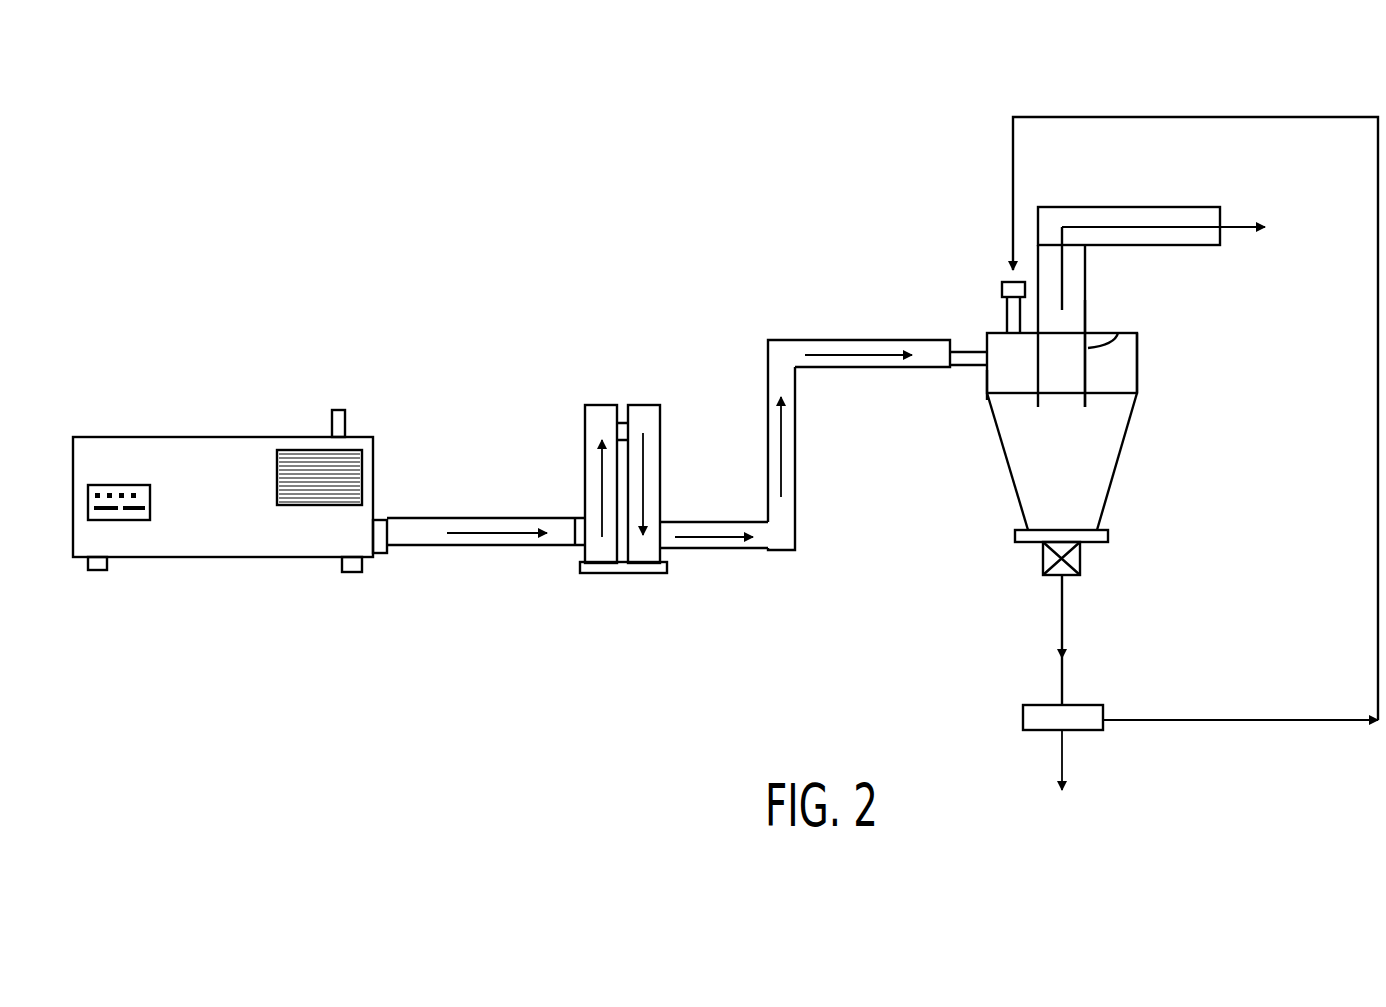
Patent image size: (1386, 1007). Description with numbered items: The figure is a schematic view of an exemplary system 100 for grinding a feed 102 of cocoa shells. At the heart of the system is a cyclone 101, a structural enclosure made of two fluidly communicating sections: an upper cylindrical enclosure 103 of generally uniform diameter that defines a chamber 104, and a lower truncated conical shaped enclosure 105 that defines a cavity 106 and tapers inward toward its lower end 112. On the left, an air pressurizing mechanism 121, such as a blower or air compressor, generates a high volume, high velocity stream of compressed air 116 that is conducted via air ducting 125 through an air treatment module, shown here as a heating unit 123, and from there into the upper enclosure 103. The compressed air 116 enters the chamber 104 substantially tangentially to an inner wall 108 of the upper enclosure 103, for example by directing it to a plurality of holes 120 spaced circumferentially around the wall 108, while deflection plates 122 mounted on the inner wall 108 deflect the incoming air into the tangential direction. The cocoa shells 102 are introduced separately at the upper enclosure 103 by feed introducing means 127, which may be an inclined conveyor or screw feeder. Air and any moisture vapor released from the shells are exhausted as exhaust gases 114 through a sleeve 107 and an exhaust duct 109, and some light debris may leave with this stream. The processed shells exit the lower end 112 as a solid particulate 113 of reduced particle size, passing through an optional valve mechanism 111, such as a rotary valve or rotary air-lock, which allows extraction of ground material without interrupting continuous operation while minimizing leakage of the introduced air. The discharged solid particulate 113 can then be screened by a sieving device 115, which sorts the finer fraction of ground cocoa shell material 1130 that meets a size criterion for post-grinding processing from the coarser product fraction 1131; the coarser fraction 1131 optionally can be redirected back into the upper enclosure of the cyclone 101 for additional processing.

The system 100 is at (565, 285).
The cyclone 101 is at (1080, 408).
The feed 102 is at (1003, 283).
The upper cylindrical enclosure 103 is at (1120, 333).
The chamber 104 is at (1122, 378).
The lower truncated conical shaped enclosure 105 is at (1010, 480).
The cavity 106 is at (1107, 455).
The sleeve 107 is at (1105, 330).
The inner wall 108 is at (990, 398).
The exhaust duct 109 is at (1198, 250).
The valve mechanism 111 is at (1081, 556).
The lower end 112 is at (1092, 520).
The solid particulate 113 is at (1060, 620).
The exhaust gases 114 is at (1232, 225).
The sieving device 115 is at (1104, 724).
The compressed air 116 is at (868, 358).
The holes 120 is at (995, 378).
The air pressurizing mechanism 121 is at (167, 437).
The deflection plates 122 is at (1133, 350).
The heating unit 123 is at (635, 575).
The air ducting 125 is at (768, 372).
The feed introducing means 127 is at (1002, 291).
The finer fraction of ground cocoa shell material 1130 is at (1065, 760).
The coarser product fraction 1131 is at (1275, 728).